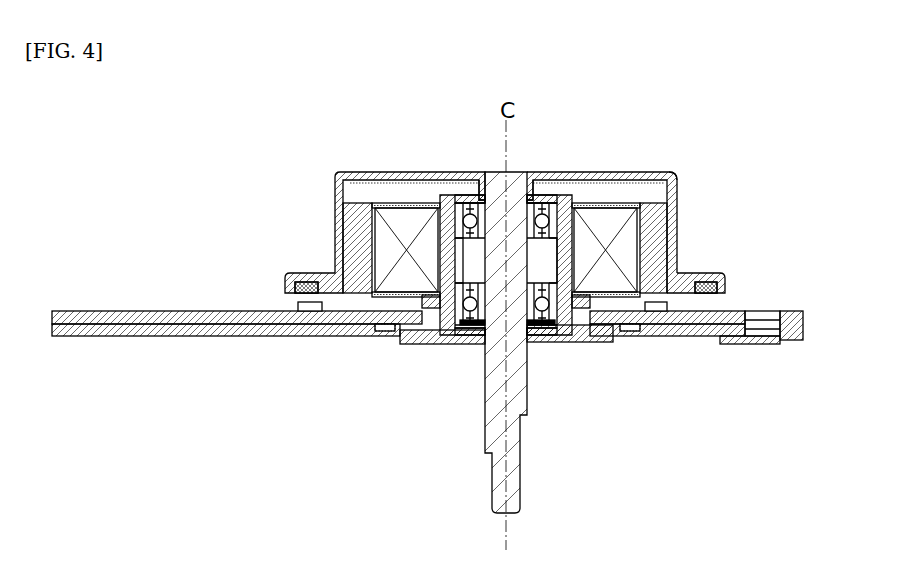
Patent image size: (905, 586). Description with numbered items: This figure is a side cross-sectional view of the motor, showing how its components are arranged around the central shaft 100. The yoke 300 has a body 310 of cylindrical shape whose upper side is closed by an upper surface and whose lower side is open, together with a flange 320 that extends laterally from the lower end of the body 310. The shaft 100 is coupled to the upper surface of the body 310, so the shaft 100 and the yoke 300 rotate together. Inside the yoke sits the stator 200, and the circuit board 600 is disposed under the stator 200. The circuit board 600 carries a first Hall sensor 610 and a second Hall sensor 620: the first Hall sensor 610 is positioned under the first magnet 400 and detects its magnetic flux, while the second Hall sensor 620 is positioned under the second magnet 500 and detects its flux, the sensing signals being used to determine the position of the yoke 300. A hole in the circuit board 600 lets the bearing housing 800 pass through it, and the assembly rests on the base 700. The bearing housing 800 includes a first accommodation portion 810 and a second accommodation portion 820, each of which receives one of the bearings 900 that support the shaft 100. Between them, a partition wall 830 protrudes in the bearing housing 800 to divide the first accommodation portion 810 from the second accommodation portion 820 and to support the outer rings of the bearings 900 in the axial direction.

The shaft 100 is at (518, 170).
The stator 200 is at (612, 202).
The yoke 300 is at (425, 168).
The body 310 is at (486, 174).
The flange 320 is at (726, 285).
The first magnet 400 is at (656, 204).
The second magnet 500 is at (305, 278).
The circuit board 600 is at (76, 306).
The first Hall sensor 610 is at (656, 313).
The second Hall sensor 620 is at (300, 308).
The base 700 is at (190, 345).
The bearing housing 800 is at (291, 356).
The first accommodation portion 810 is at (447, 219).
The second accommodation portion 820 is at (446, 318).
The partition wall 830 is at (470, 262).
The bearings 900 is at (554, 199).